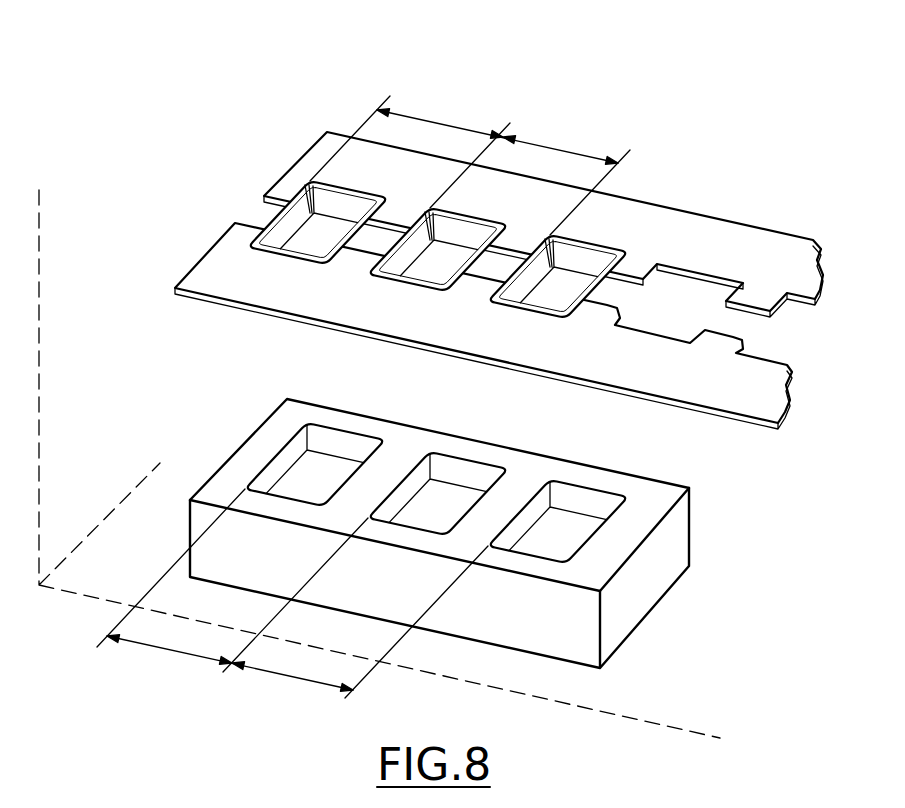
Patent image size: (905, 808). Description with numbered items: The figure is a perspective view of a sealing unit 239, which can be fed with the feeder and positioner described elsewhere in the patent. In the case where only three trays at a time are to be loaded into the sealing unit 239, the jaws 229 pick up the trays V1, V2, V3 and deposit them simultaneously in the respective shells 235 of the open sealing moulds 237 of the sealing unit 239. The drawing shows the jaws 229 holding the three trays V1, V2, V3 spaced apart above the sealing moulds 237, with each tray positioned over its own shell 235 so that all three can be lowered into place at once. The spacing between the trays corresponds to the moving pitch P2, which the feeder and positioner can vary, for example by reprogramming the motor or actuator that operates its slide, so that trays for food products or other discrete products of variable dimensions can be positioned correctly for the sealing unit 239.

The jaws 229 is at (723, 217).
The shells 235 is at (307, 485).
The sealing moulds 237 is at (653, 568).
The sealing unit 239 is at (40, 297).
The tray V1 is at (548, 300).
The tray V2 is at (420, 278).
The tray V3 is at (280, 227).
The moving pitch P2 is at (430, 120).